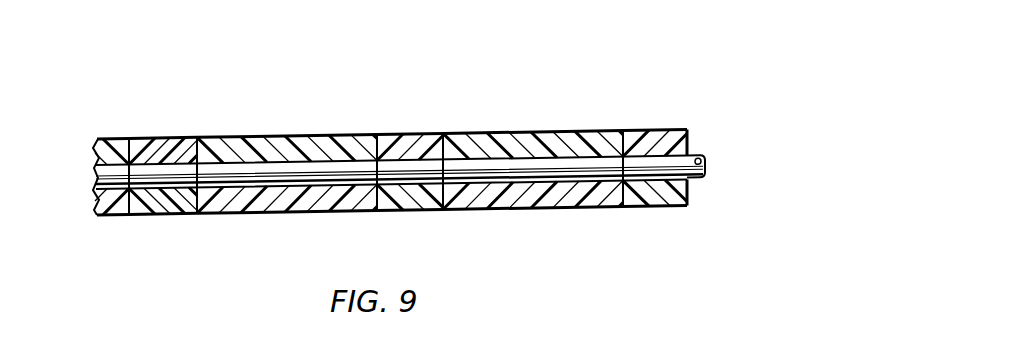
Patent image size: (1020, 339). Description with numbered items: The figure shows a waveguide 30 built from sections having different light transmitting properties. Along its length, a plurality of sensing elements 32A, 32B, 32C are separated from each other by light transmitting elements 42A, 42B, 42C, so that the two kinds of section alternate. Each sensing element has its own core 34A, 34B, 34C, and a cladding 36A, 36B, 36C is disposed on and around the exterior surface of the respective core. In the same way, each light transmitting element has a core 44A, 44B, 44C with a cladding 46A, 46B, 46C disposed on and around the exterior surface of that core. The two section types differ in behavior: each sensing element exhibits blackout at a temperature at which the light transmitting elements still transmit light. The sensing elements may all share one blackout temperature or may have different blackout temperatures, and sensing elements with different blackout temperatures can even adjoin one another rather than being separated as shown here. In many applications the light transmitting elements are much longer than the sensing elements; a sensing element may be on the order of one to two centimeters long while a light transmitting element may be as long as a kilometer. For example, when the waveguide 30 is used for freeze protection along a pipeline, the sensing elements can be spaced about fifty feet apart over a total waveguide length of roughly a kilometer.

The waveguide 30 is at (728, 108).
The sensing element 32A is at (147, 140).
The sensing element 32B is at (385, 135).
The sensing element 32C is at (657, 131).
The core 34A is at (168, 183).
The core 34B is at (408, 178).
The core 34C is at (660, 172).
The cladding 36A is at (175, 148).
The cladding 36B is at (422, 145).
The cladding 36C is at (672, 138).
The light transmitting element 42A is at (106, 139).
The light transmitting element 42B is at (303, 135).
The light transmitting element 42C is at (583, 131).
The core 44A is at (112, 178).
The core 44B is at (277, 180).
The core 44C is at (521, 176).
The cladding 46A is at (93, 148).
The cladding 46B is at (260, 143).
The cladding 46C is at (500, 142).